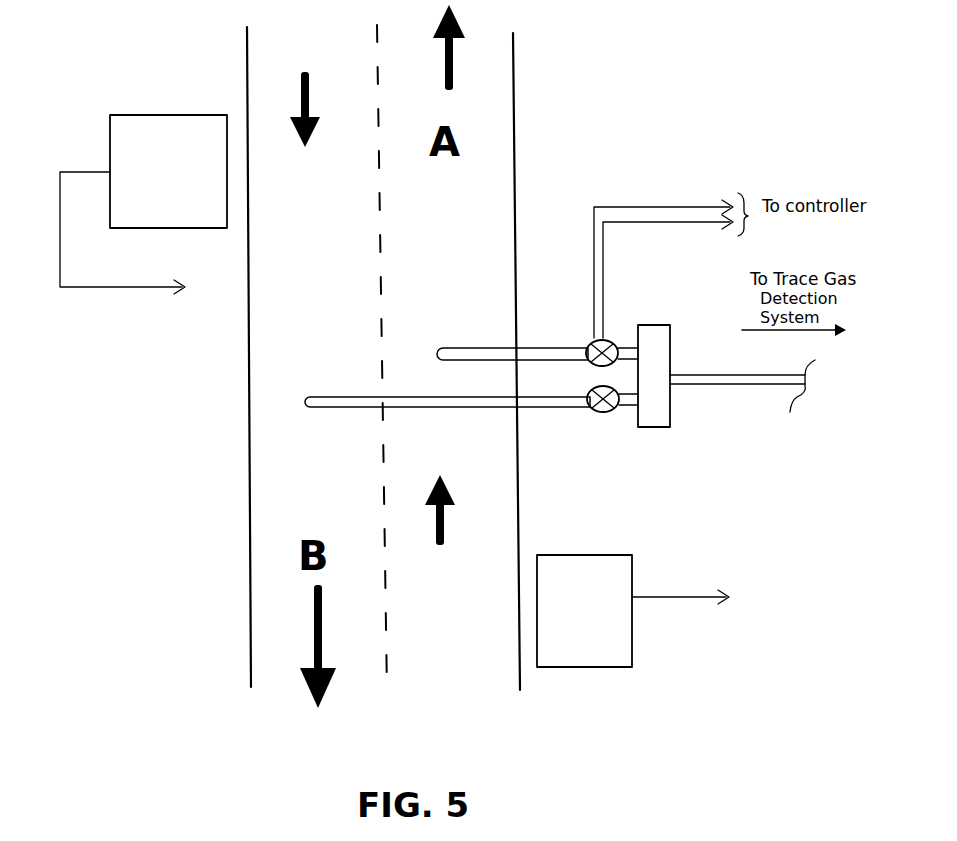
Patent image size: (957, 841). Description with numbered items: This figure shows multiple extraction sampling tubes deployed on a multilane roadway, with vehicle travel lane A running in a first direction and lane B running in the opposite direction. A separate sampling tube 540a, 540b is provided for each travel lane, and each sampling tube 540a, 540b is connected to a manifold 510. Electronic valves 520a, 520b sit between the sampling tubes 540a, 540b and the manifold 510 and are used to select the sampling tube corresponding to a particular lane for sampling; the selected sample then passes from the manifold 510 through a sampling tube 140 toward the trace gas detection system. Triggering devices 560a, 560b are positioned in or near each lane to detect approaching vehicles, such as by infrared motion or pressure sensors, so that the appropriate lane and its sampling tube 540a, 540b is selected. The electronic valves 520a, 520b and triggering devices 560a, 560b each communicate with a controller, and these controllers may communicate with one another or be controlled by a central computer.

The sampling tube 140 is at (743, 396).
The manifold 510 is at (655, 418).
The electronic valve 520a is at (586, 364).
The electronic valve 520b is at (596, 416).
The sampling tube 540a is at (546, 340).
The sampling tube 540b is at (537, 416).
The triggering device 560a is at (673, 611).
The triggering device 560b is at (143, 230).